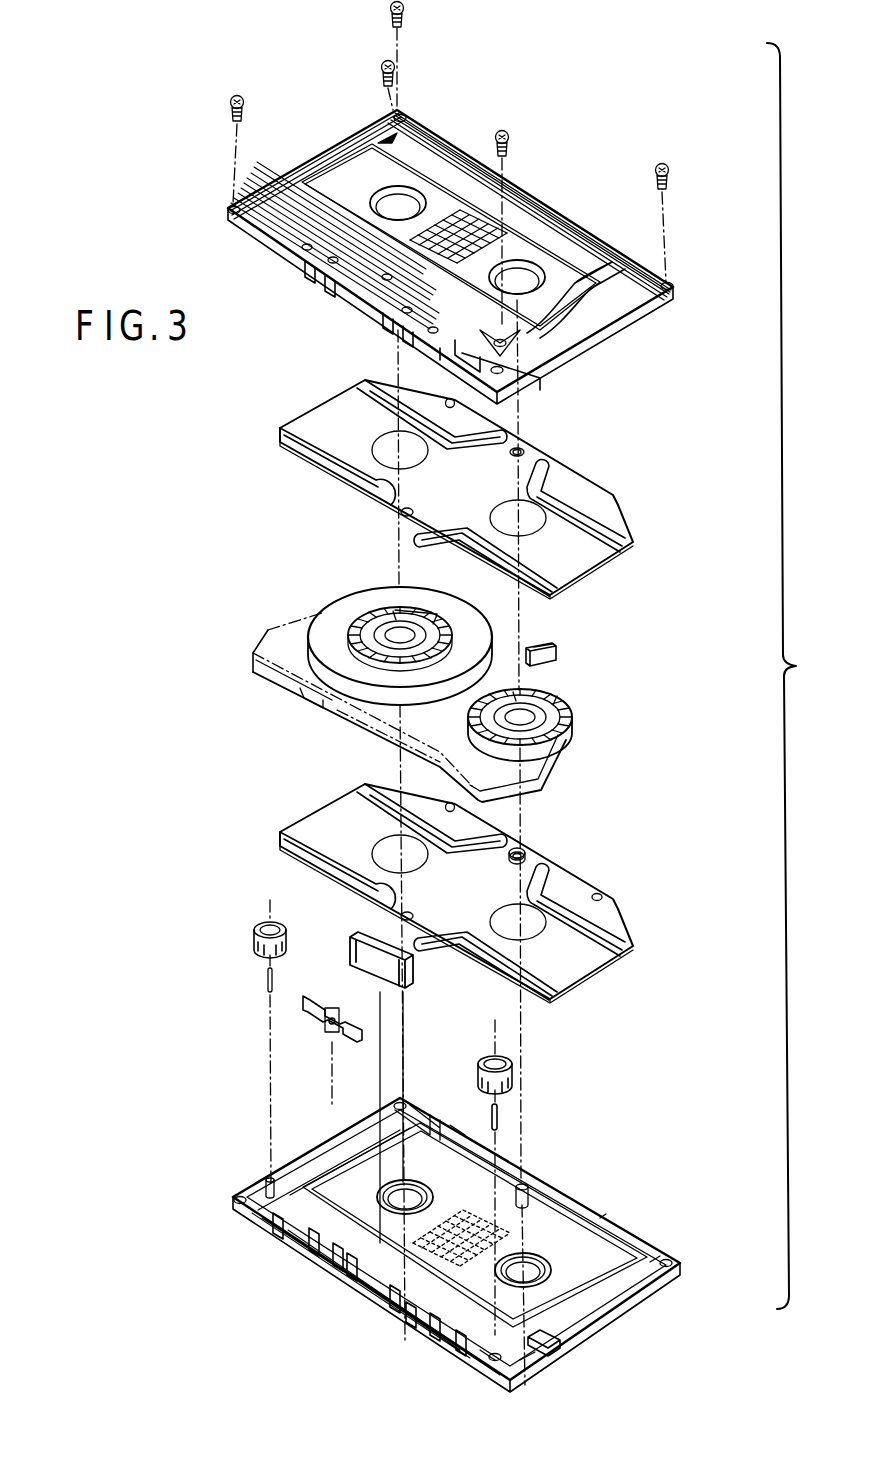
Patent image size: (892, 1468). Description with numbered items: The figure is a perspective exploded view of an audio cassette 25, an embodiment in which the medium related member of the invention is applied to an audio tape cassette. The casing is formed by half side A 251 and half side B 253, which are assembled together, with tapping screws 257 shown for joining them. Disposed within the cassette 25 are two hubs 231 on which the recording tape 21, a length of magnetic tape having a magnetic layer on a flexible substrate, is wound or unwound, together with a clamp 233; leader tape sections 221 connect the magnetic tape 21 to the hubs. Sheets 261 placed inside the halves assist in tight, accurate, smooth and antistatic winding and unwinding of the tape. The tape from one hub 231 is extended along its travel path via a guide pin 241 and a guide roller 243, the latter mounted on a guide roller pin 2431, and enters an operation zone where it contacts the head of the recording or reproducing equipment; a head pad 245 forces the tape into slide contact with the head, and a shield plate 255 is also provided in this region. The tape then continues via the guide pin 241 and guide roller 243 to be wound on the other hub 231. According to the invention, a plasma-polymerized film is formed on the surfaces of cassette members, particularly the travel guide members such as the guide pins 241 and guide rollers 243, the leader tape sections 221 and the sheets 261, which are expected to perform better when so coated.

The recording tape 21 is at (357, 601).
The audio cassette 25 is at (186, 157).
The leader tape section 221 is at (543, 793).
The hub 231 is at (574, 723).
The clamp 233 is at (558, 655).
The guide pin 241 is at (562, 1345).
The guide roller 243 is at (512, 1075).
The guide roller pin 2431 is at (500, 1118).
The head pad 245 is at (328, 1014).
The half side A 251 is at (635, 244).
The half side B 253 is at (590, 1205).
The shield plate 255 is at (348, 935).
The tapping screw 257 is at (669, 180).
The sheet 261 is at (612, 512).